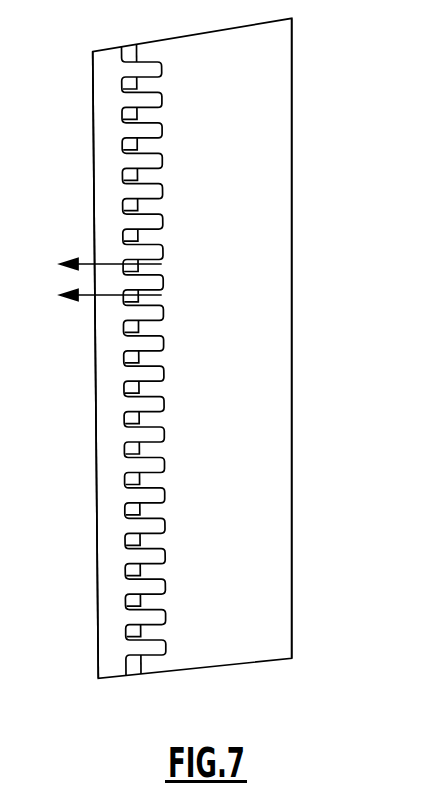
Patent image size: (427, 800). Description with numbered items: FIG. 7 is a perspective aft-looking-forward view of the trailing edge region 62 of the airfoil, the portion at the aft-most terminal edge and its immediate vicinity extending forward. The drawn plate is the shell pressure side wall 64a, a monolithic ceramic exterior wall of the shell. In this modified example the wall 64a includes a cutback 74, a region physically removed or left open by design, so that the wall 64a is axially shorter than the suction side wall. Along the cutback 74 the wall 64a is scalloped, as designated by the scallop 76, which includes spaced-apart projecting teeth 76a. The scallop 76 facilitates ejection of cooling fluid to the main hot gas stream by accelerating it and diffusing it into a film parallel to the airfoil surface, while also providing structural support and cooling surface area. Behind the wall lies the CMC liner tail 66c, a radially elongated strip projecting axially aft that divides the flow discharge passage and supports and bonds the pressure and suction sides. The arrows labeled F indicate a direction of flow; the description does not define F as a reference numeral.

The trailing edge region 62 is at (309, 423).
The shell pressure side wall 64a is at (267, 302).
The liner tail 66c is at (110, 350).
The cutback 74 is at (106, 205).
The projecting teeth 76a is at (130, 382).
The scallop 76 is at (124, 456).
The force direction F is at (87, 297).